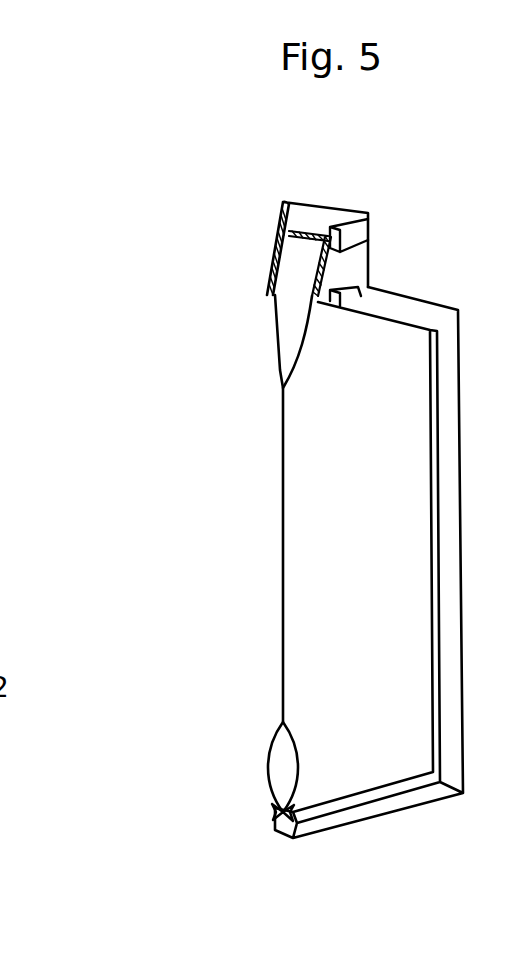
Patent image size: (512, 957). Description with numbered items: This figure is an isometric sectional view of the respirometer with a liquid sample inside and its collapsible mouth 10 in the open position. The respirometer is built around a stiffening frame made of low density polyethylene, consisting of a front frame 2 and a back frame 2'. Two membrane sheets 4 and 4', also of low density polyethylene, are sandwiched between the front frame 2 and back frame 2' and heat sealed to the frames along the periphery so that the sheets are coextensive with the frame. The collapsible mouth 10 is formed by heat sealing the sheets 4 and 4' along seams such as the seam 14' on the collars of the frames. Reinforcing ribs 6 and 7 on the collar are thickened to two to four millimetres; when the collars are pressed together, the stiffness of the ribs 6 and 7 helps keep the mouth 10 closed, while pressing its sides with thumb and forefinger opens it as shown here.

The front frame 2 is at (369, 592).
The back frame 2' is at (250, 786).
The sheet 4 is at (325, 509).
The sheet 4' is at (229, 341).
The reinforcing rib 6 is at (368, 218).
The reinforcing rib 7 is at (368, 287).
The collapsible mouth 10 is at (297, 263).
The seam 14' is at (302, 206).